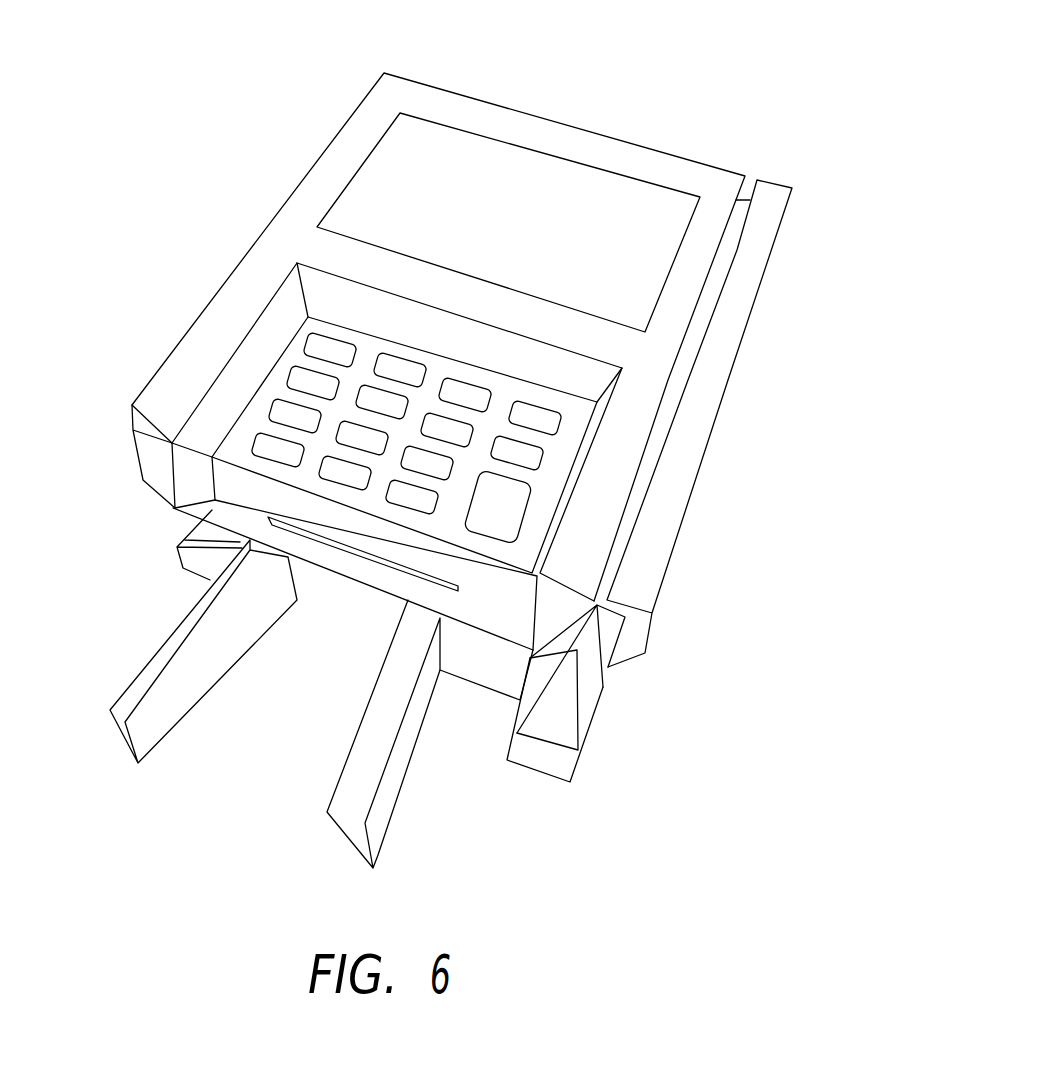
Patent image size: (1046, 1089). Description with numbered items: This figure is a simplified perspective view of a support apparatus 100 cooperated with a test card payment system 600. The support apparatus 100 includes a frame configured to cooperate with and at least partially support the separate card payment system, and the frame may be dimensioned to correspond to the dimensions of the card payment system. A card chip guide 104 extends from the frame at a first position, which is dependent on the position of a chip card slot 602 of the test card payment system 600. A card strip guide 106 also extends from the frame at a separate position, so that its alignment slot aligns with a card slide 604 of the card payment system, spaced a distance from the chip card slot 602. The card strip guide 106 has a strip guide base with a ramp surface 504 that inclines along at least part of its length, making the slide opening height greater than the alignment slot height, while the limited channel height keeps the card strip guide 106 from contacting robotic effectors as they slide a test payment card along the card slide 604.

The test card payment system 600 is at (262, 218).
The card slide 604 is at (737, 233).
The chip card slot 602 is at (338, 546).
The support apparatus 100 is at (154, 571).
The card chip guide 104 is at (128, 789).
The card strip guide 106 is at (607, 776).
The ramp surface 504 is at (552, 712).